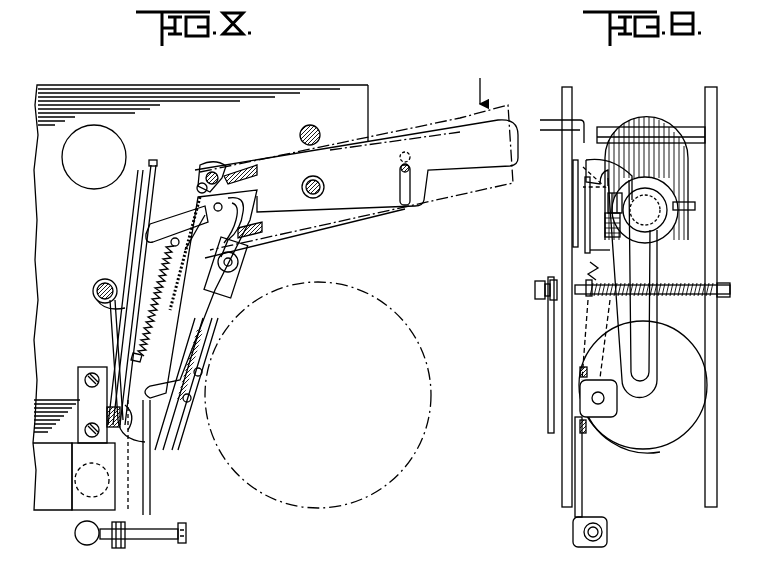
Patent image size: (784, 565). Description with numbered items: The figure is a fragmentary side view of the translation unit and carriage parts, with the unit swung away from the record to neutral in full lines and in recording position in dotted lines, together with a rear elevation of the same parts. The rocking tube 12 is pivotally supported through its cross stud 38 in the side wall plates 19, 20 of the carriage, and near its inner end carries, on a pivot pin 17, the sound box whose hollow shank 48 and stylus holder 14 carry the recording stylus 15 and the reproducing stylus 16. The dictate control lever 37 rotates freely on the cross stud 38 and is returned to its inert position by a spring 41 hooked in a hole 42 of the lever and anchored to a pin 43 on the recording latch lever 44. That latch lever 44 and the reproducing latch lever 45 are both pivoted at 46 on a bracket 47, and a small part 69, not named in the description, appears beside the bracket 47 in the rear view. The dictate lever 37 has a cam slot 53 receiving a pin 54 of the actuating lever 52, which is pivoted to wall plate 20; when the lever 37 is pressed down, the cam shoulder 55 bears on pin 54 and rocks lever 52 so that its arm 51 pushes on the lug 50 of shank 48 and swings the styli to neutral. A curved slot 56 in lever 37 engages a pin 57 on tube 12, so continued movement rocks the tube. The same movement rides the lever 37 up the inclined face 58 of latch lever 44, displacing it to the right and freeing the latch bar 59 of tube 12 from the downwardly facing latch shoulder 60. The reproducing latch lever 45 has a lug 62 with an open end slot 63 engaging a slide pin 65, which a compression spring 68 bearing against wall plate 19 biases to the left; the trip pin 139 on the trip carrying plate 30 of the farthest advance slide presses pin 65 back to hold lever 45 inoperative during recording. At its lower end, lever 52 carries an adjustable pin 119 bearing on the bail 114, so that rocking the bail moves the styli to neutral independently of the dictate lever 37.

In FIG. 8, the rocking tube 12 is at (466, 198).
In FIG. 8, the stylus holder 14 is at (172, 420).
In FIG. 8, the recording stylus 15 is at (200, 373).
In FIG. 8, the reproducing stylus 16 is at (188, 397).
In FIG. 8, the pivot pin 17 is at (222, 206).
In FIG. 9, the side wall plate 19 is at (718, 461).
In FIG. 8, the side wall plate 20 is at (370, 93).
In FIG. 9, the side wall plate 20 is at (562, 480).
In FIG. 9, the trip carrying plate 30 is at (548, 404).
In FIG. 8, the dictate control lever 37 is at (490, 113).
In FIG. 9, the dictate control lever 37 is at (590, 128).
In FIG. 8, the cross stud 38 is at (323, 181).
In FIG. 8, the spring 41 is at (165, 295).
In FIG. 9, the spring 41 is at (588, 265).
In FIG. 8, the hole 42 is at (175, 238).
In FIG. 8, the pin 43 is at (136, 357).
In FIG. 9, the pin 43 is at (602, 357).
In FIG. 8, the recording latch lever 44 is at (154, 162).
In FIG. 9, the recording latch lever 44 is at (613, 190).
In FIG. 8, the reproducing latch lever 45 is at (138, 205).
In FIG. 9, the reproducing latch lever 45 is at (618, 203).
In FIG. 9, the pivot 46 is at (604, 401).
In FIG. 9, the bracket 47 is at (600, 422).
In FIG. 8, the hollow shank 48 is at (182, 327).
In FIG. 8, the lug 50 is at (217, 287).
In FIG. 8, the arm 51 is at (238, 264).
In FIG. 8, the actuating lever 52 is at (152, 487).
In FIG. 9, the actuating lever 52 is at (582, 467).
In FIG. 8, the cam slot 53 is at (200, 188).
In FIG. 8, the pin 54 is at (202, 166).
In FIG. 8, the cam shoulder 55 is at (250, 181).
In FIG. 8, the curved slot 56 is at (400, 190).
In FIG. 8, the pin 57 is at (410, 168).
In FIG. 9, the inclined face 58 is at (595, 183).
In FIG. 8, the latch bar 59 is at (158, 226).
In FIG. 9, the latch bar 59 is at (605, 223).
In FIG. 9, the latch shoulder 60 is at (590, 252).
In FIG. 8, the lug 62 is at (112, 304).
In FIG. 9, the lug 62 is at (590, 302).
In FIG. 8, the open end slot 63 is at (93, 290).
In FIG. 8, the slide pin 65 is at (96, 299).
In FIG. 9, the slide pin 65 is at (548, 298).
In FIG. 9, the compression spring 68 is at (682, 297).
In FIG. 9, the stud 69 is at (697, 206).
In FIG. 8, the bail 114 is at (74, 538).
In FIG. 8, the adjustable pin 119 is at (163, 527).
In FIG. 9, the adjustable pin 119 is at (607, 530).
In FIG. 9, the trip pin 139 is at (535, 290).